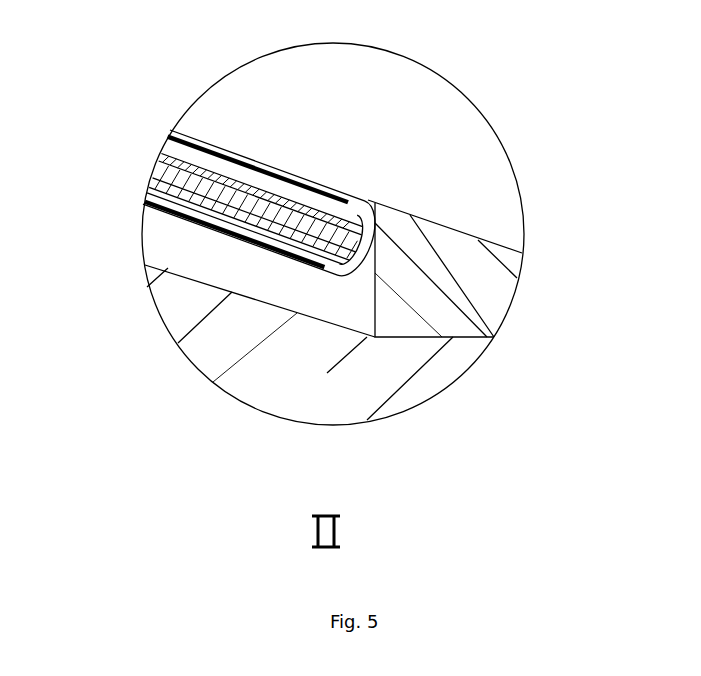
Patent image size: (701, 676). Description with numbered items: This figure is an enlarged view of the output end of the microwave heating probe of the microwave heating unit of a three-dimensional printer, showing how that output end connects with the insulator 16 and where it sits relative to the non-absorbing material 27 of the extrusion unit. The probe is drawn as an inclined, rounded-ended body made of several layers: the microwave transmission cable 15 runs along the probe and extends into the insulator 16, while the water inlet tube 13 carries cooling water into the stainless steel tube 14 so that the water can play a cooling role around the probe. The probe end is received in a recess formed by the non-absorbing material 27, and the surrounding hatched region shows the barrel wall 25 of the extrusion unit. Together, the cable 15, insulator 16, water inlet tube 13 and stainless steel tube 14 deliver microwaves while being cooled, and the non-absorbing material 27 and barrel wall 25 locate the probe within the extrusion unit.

The water inlet tube 13 is at (163, 138).
The stainless steel tube 14 is at (147, 207).
The transmission cable 15 is at (160, 177).
The insulator 16 is at (353, 193).
The barrel wall 25 is at (290, 360).
The non-absorbing material 27 is at (462, 288).